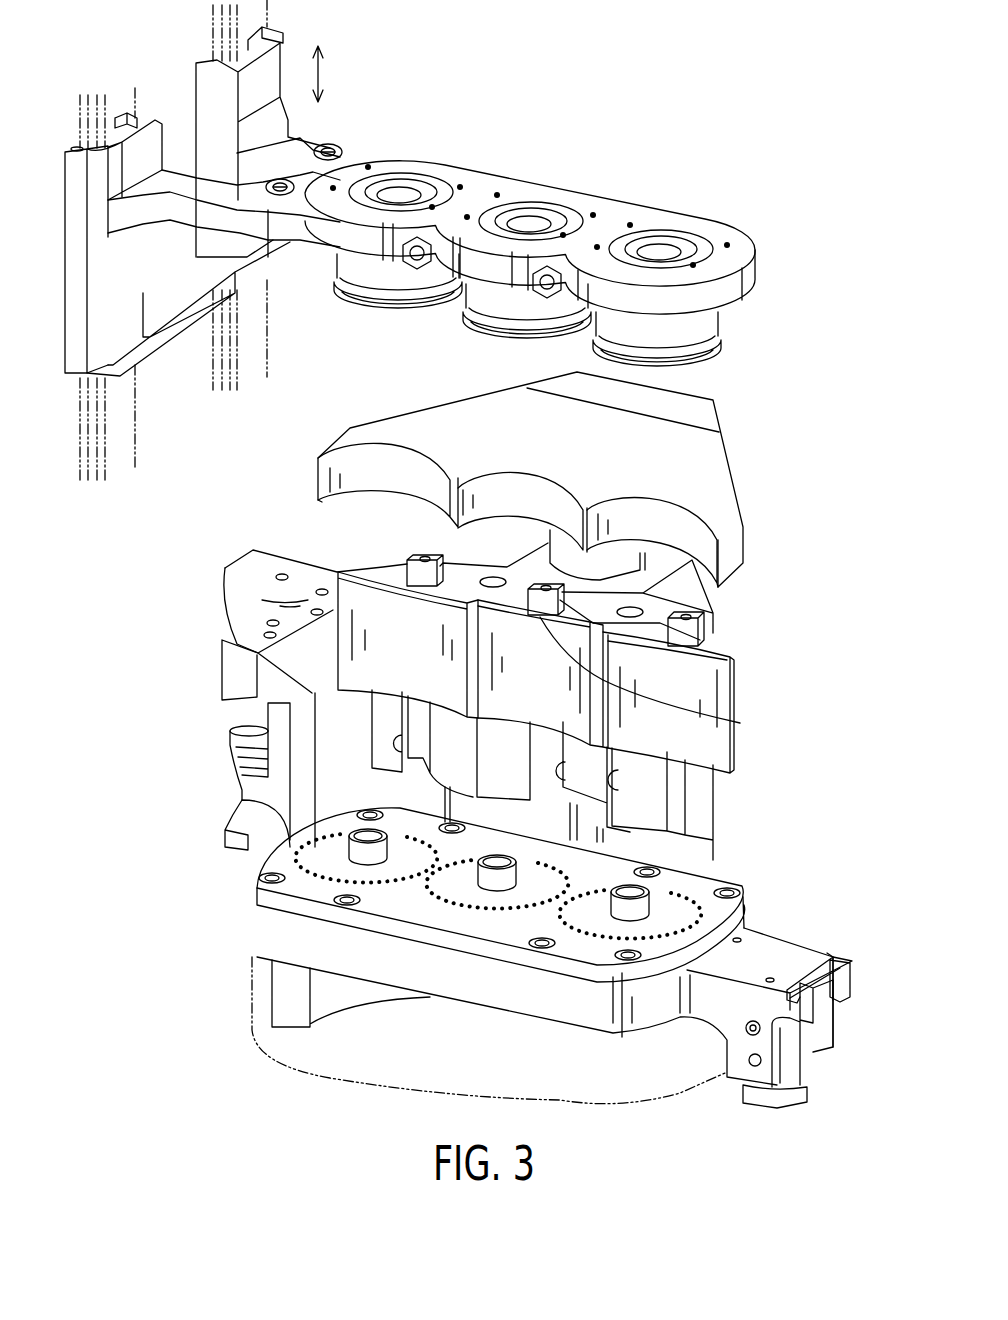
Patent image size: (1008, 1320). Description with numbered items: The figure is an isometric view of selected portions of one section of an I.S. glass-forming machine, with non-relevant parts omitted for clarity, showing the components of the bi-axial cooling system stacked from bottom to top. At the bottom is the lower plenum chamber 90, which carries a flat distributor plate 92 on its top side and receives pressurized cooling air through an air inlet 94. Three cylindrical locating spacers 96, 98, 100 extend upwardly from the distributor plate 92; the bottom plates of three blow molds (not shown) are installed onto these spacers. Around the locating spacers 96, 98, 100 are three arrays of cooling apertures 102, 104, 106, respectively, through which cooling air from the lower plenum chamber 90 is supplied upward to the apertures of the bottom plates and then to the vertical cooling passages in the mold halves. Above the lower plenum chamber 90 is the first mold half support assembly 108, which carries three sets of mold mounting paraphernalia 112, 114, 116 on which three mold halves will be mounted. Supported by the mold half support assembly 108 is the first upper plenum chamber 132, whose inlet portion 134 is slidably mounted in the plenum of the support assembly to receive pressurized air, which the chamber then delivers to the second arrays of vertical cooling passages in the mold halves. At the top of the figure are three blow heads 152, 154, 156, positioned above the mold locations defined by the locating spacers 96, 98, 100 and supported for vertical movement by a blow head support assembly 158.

The lower plenum chamber 90 is at (487, 1026).
The distributor plate 92 is at (737, 917).
The air inlet 94 is at (777, 1108).
The cylindrical locating spacer 96 is at (360, 850).
The cylindrical locating spacer 98 is at (493, 887).
The cylindrical locating spacer 100 is at (633, 913).
The array of cooling apertures 102 is at (372, 884).
The array of cooling apertures 104 is at (560, 912).
The array of cooling apertures 106 is at (727, 877).
The mold half support assembly 108 is at (723, 605).
The mold mounting paraphernalia 112 is at (353, 570).
The mold mounting paraphernalia 114 is at (740, 723).
The mold mounting paraphernalia 116 is at (713, 668).
The first upper plenum chamber 132 is at (744, 455).
The inlet portion 134 is at (555, 548).
The blow head 152 is at (383, 321).
The blow head 154 is at (495, 351).
The blow head 156 is at (709, 374).
The blow head support assembly 158 is at (496, 174).